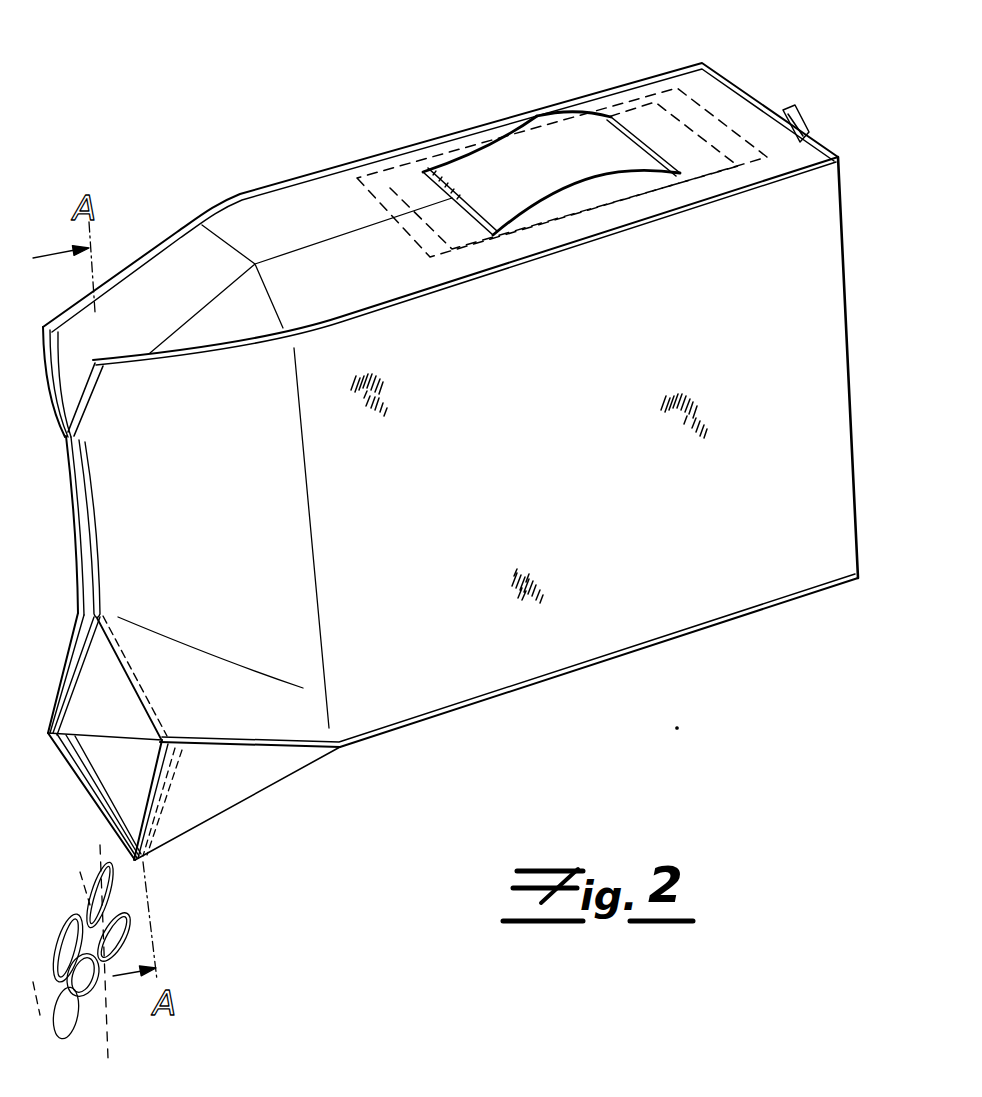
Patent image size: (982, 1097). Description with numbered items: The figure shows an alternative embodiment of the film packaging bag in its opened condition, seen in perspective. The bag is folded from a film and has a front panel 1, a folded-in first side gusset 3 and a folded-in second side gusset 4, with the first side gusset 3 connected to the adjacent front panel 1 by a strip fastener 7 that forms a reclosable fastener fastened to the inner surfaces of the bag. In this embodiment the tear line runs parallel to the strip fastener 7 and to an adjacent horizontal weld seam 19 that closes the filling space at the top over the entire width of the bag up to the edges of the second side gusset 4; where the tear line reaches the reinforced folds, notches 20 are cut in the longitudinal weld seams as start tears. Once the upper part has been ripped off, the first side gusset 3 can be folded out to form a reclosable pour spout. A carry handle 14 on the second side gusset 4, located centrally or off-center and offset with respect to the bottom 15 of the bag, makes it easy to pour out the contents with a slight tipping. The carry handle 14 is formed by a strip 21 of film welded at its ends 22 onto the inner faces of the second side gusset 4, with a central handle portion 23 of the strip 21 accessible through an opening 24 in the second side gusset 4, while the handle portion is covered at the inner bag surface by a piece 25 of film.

The front panel 1 is at (563, 459).
The first side gusset 3 is at (295, 812).
The second side gusset 4 is at (262, 190).
The strip fastener 7 is at (95, 803).
The carry handle 14 is at (569, 176).
The bottom 15 is at (794, 94).
The horizontal weld seam 19 is at (97, 549).
The notches 20 is at (163, 749).
The strip of film 21 is at (526, 224).
The ends of the strip of film 22 is at (446, 262).
The central handle portion 23 is at (488, 146).
The opening 24 is at (596, 192).
The piece of film 25 is at (390, 166).